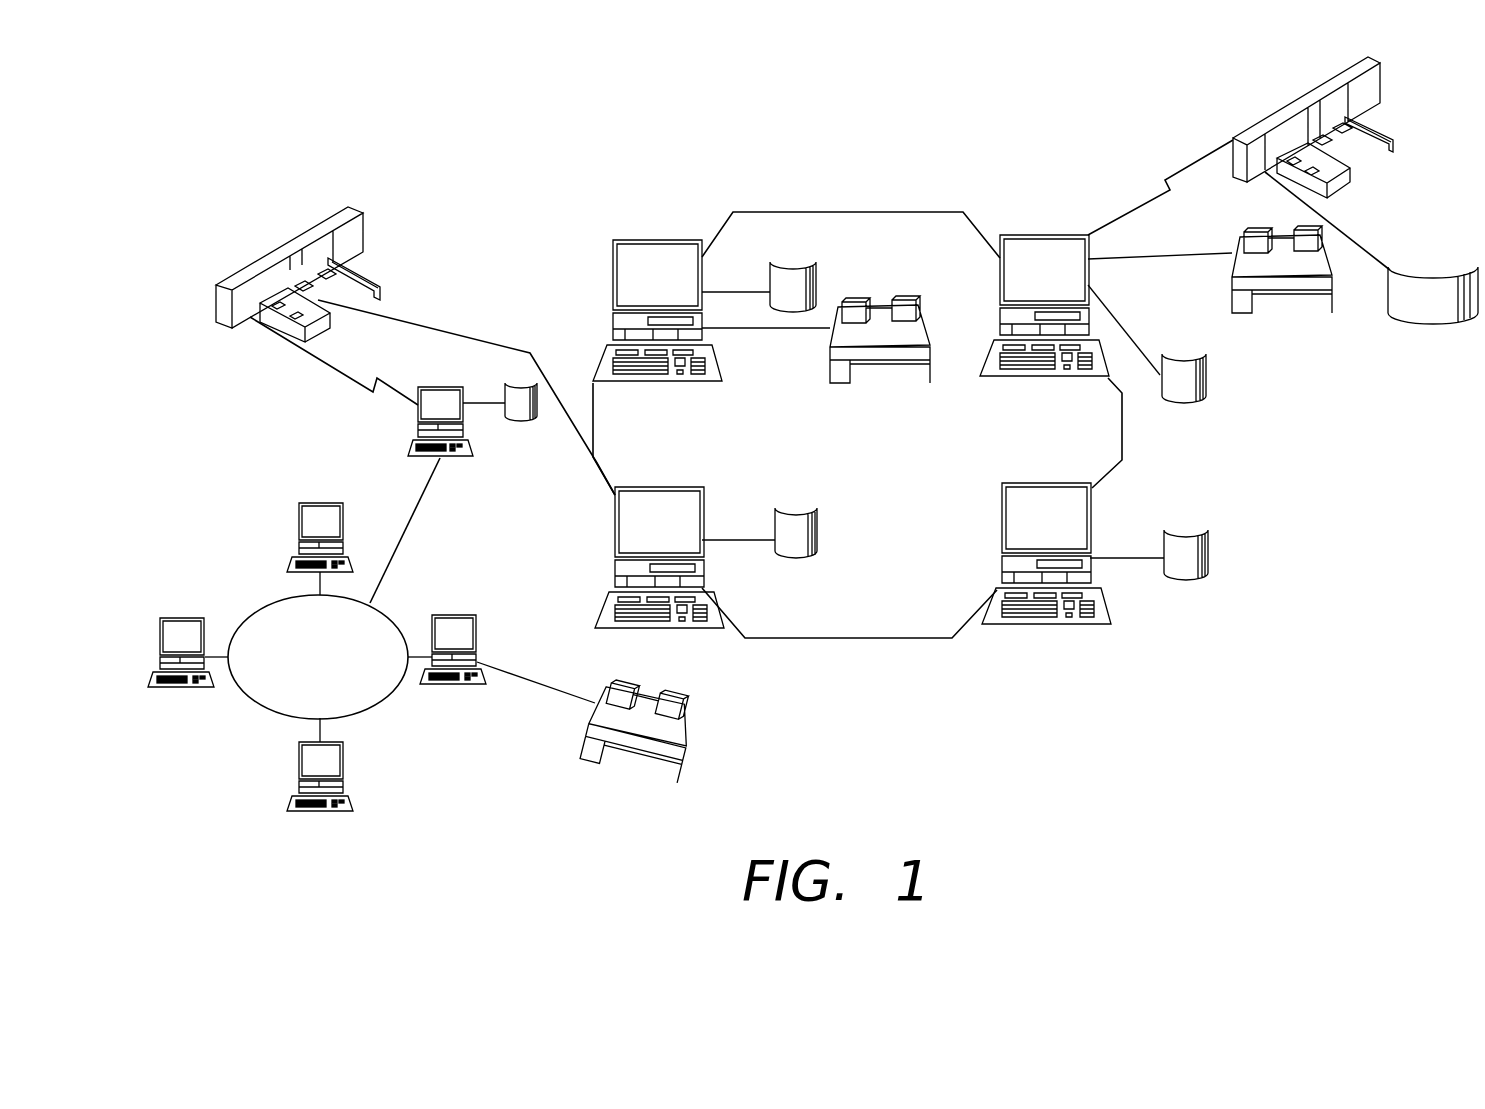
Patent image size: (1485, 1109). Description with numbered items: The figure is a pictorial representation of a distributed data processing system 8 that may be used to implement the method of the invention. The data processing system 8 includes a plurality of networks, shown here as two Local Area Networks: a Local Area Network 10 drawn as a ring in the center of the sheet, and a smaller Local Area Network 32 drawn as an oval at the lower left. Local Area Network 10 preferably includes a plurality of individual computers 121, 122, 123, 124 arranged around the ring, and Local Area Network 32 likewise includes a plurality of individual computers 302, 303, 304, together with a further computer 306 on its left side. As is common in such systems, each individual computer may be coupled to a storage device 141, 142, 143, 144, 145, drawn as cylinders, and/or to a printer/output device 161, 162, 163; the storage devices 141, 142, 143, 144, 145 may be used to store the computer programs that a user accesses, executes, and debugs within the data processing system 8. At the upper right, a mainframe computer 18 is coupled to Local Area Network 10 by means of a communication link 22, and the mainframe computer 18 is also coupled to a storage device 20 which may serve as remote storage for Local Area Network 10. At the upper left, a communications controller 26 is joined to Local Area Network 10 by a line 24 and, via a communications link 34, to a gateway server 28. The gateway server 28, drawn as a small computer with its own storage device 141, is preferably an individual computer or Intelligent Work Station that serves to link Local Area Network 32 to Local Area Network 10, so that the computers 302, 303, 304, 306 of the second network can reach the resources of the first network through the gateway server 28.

The data processing system 8 is at (851, 170).
The Local Area Network 10 is at (815, 640).
The mainframe computer 18 is at (1325, 87).
The storage device 20 is at (1460, 253).
The communication link 22 is at (1193, 173).
The communication link 24 is at (445, 325).
The communications controller 26 is at (363, 210).
The gateway server 28 is at (440, 387).
The Local Area Network 32 is at (262, 707).
The communications link 34 is at (347, 378).
The individual computer 121 is at (660, 239).
The individual computer 122 is at (1053, 233).
The individual computer 123 is at (660, 486).
The individual computer 124 is at (1053, 482).
The storage device 141 is at (517, 423).
The storage device 142 is at (818, 279).
The storage device 143 is at (818, 527).
The storage device 144 is at (1208, 380).
The storage device 145 is at (1208, 557).
The printer/output device 161 is at (692, 728).
The printer/output device 162 is at (885, 308).
The printer/output device 163 is at (1236, 243).
The individual computer 302 is at (322, 502).
The individual computer 303 is at (448, 613).
The individual computer 304 is at (345, 758).
The computer 306 is at (190, 617).